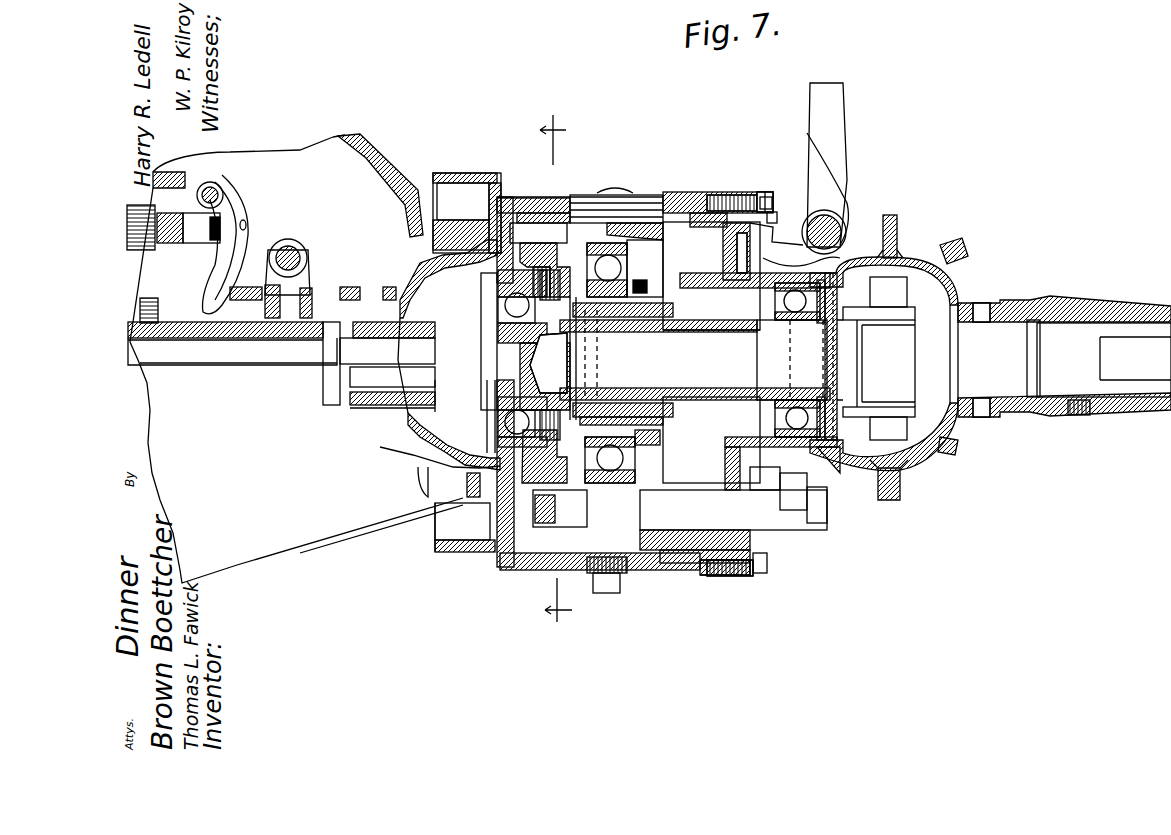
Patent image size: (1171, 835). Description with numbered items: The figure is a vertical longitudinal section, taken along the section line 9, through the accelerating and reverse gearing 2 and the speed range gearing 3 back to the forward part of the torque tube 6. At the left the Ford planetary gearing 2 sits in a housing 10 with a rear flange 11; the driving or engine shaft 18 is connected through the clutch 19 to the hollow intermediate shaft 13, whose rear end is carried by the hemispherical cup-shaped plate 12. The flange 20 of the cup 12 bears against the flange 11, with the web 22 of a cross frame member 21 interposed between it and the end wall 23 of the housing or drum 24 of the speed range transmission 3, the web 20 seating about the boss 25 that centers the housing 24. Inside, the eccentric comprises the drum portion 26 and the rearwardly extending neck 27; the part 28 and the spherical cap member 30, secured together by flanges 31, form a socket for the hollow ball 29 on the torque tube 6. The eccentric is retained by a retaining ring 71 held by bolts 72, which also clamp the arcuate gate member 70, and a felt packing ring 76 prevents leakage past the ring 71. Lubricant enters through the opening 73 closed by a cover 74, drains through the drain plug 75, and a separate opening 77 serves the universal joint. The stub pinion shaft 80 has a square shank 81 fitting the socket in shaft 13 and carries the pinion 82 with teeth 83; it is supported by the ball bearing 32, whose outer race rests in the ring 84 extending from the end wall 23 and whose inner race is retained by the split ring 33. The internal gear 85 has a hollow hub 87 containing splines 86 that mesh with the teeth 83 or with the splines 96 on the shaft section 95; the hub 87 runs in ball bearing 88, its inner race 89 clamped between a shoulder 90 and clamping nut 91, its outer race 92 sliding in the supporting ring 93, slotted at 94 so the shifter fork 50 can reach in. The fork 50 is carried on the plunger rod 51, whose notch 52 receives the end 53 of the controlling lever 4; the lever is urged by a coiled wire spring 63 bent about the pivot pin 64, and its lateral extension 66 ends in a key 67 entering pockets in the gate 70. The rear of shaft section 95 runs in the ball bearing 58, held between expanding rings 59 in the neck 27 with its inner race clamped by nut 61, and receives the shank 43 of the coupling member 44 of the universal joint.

The planetary accelerating and reverse gearing 2 is at (368, 150).
The speed range gearing 3 is at (640, 185).
The controlling lever 4 is at (843, 130).
The torque tube 6 is at (1100, 307).
The section line 9 is at (556, 373).
The housing 10 is at (340, 530).
The flange 11 is at (455, 222).
The hemispherical cup-shaped plate 12 is at (420, 275).
The hollow shaft 13 is at (290, 372).
The driving shaft 18 is at (195, 372).
The clutch 19 is at (140, 205).
The flange 20 is at (480, 215).
The cross frame member 21 is at (460, 165).
The web 22 is at (493, 173).
The end wall 23 is at (497, 545).
The housing 24 is at (545, 570).
The boss 25 is at (482, 280).
The drum 26 is at (710, 192).
The neck 27 is at (830, 440).
The socket part 28 is at (838, 458).
The ball 29 is at (955, 455).
The spherical cap member 30 is at (912, 262).
The flanges 31 is at (892, 215).
The ball bearing 32 is at (487, 430).
The split retaining ring 33 is at (498, 318).
The shank 43 is at (755, 355).
The coupling member 44 is at (850, 363).
The shifter fork 50 is at (590, 495).
The plunger rod 51 is at (690, 490).
The notch 52 is at (785, 512).
The lever end 53 is at (812, 525).
The ball bearing 58 is at (773, 300).
The expanding rings 59 is at (822, 425).
The clamping nut 61 is at (845, 325).
The coiled wire spring 63 is at (838, 175).
The pivot pin 64 is at (832, 222).
The lateral extension 66 is at (780, 245).
The key 67 is at (775, 197).
The gate member 70 is at (757, 195).
The retaining ring 71 is at (735, 576).
The bolts 72 is at (764, 197).
The filling opening 73 is at (580, 195).
The cover 74 is at (612, 190).
The drain plug 75 is at (603, 593).
The packing ring 76 is at (705, 575).
The lubricating opening 77 is at (975, 243).
The stub pinion shaft 80 is at (485, 398).
The square shank 81 is at (370, 375).
The pinion 82 is at (578, 378).
The teeth 83 is at (572, 400).
The ring 84 is at (525, 243).
The internal gear 85 is at (480, 505).
The splines 86 is at (575, 270).
The hollow hub 87 is at (618, 330).
The ball bearing 88 is at (660, 440).
The inner race 89 is at (660, 395).
The shoulder 90 is at (630, 390).
The clamping nut 91 is at (670, 425).
The outer race 92 is at (680, 460).
The supporting ring 93 is at (640, 228).
The slot 94 is at (640, 485).
The shaft section 95 is at (685, 325).
The splines 96 is at (675, 290).